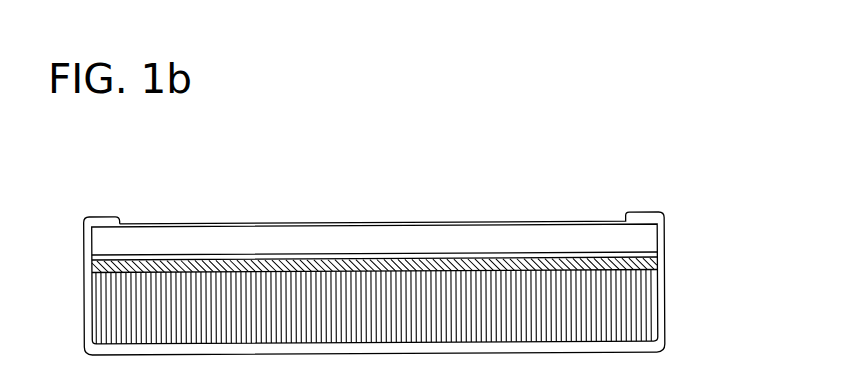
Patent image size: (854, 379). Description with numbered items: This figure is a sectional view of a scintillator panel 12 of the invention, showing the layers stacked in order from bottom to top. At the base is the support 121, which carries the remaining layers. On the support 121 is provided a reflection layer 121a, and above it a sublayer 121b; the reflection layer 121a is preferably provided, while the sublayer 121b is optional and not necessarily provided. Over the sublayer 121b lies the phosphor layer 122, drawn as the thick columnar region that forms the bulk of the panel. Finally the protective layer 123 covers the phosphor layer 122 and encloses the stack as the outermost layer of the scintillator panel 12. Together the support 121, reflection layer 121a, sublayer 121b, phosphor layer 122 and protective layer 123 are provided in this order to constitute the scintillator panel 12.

The scintillator panel 12 is at (432, 218).
The support 121 is at (668, 224).
The reflection layer 121a is at (668, 255).
The sublayer 121b is at (668, 264).
The phosphor layer 122 is at (668, 300).
The protective layer 123 is at (668, 340).